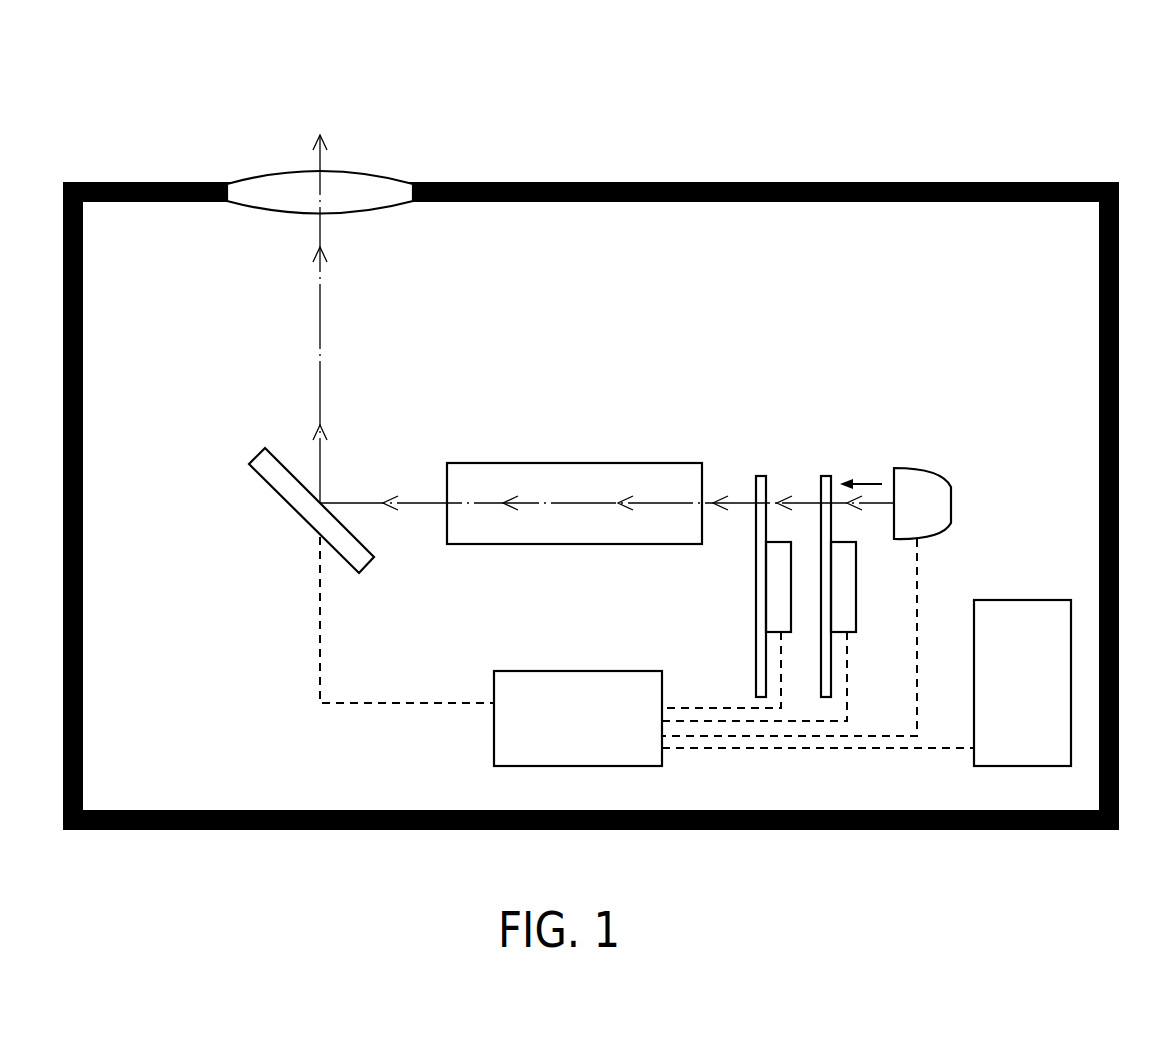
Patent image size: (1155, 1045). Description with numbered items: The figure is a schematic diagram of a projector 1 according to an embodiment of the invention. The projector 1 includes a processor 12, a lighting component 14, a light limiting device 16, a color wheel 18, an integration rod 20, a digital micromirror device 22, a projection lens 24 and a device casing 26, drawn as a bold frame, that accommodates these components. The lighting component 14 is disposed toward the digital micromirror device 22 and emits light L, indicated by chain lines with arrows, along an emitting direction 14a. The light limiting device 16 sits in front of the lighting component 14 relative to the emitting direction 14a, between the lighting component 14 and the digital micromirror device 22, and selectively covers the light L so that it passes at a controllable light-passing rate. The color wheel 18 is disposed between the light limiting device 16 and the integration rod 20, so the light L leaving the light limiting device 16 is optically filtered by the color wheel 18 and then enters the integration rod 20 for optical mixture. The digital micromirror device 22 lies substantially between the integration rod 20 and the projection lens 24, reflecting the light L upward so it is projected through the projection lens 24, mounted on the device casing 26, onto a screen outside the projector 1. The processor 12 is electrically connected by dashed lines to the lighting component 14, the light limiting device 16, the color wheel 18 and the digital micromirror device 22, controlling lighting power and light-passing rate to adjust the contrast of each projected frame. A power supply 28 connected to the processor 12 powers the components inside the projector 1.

The projector 1 is at (1060, 97).
The processor 12 is at (565, 675).
The lighting component 14 is at (920, 478).
The emitting direction 14a is at (865, 480).
The light limiting device 16 is at (828, 462).
The color wheel 18 is at (762, 462).
The integration rod 20 is at (587, 467).
The digital micromirror device 22 is at (283, 488).
The projection lens 24 is at (268, 181).
The device casing 26 is at (733, 182).
The power supply 28 is at (1015, 603).
The light L is at (383, 500).